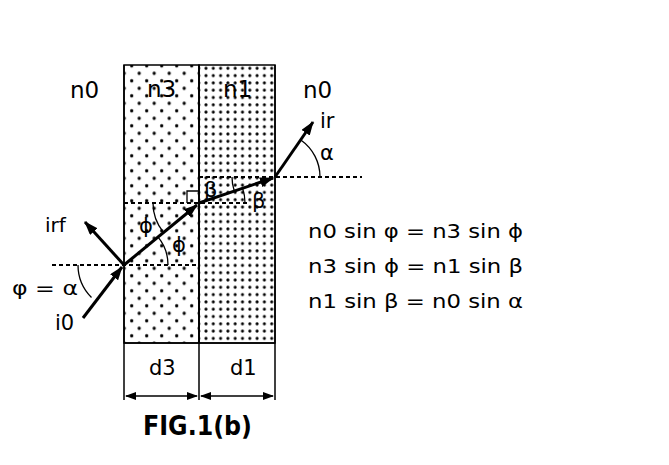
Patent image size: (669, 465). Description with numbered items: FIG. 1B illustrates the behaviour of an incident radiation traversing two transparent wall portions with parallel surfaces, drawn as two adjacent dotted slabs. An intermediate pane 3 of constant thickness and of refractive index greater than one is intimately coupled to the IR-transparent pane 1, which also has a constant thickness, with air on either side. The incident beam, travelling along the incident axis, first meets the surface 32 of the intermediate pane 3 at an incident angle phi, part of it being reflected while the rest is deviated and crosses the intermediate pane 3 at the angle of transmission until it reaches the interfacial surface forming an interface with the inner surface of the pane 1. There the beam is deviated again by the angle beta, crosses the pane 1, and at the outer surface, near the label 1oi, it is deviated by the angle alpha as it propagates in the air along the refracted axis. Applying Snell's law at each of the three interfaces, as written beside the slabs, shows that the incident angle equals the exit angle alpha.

The intermediate pane 3 is at (163, 65).
The IR-transparent pane 1 is at (233, 65).
The surface of the anti-reflection unit 32 is at (124, 330).
The output interface of first layer 1oi is at (275, 328).